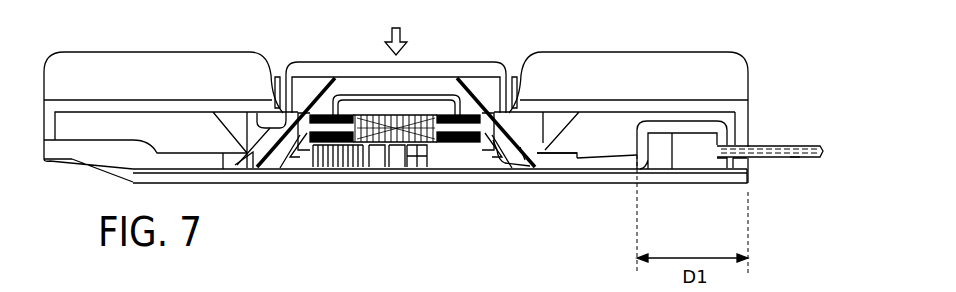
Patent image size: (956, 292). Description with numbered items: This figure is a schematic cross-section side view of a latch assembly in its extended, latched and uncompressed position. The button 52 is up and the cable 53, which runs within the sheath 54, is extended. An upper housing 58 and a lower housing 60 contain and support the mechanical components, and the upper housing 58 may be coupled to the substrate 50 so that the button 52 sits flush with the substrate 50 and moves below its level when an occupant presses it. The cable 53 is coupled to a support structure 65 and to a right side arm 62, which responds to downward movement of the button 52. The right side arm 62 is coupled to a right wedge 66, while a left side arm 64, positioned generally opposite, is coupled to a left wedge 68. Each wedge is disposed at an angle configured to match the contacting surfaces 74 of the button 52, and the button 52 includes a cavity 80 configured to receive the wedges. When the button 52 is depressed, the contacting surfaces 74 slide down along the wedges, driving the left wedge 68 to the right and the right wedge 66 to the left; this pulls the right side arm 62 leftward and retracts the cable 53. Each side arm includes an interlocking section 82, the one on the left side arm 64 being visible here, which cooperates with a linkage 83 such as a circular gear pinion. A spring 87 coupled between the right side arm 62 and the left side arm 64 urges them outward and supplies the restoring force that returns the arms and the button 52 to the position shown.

The substrate 50 is at (140, 63).
The button 52 is at (467, 72).
The cable 53 is at (797, 160).
The sheath 54 is at (806, 145).
The upper housing 58 is at (157, 107).
The lower housing 60 is at (557, 177).
The right side arm 62 is at (600, 163).
The left side arm 64 is at (62, 145).
The support structure 65 is at (690, 155).
The right wedge 66 is at (520, 147).
The left wedge 68 is at (279, 148).
The contacting surfaces 74 is at (283, 113).
The cavity 80 is at (347, 83).
The interlocking section 82 is at (322, 158).
The linkage 83 is at (418, 157).
The spring 87 is at (382, 148).